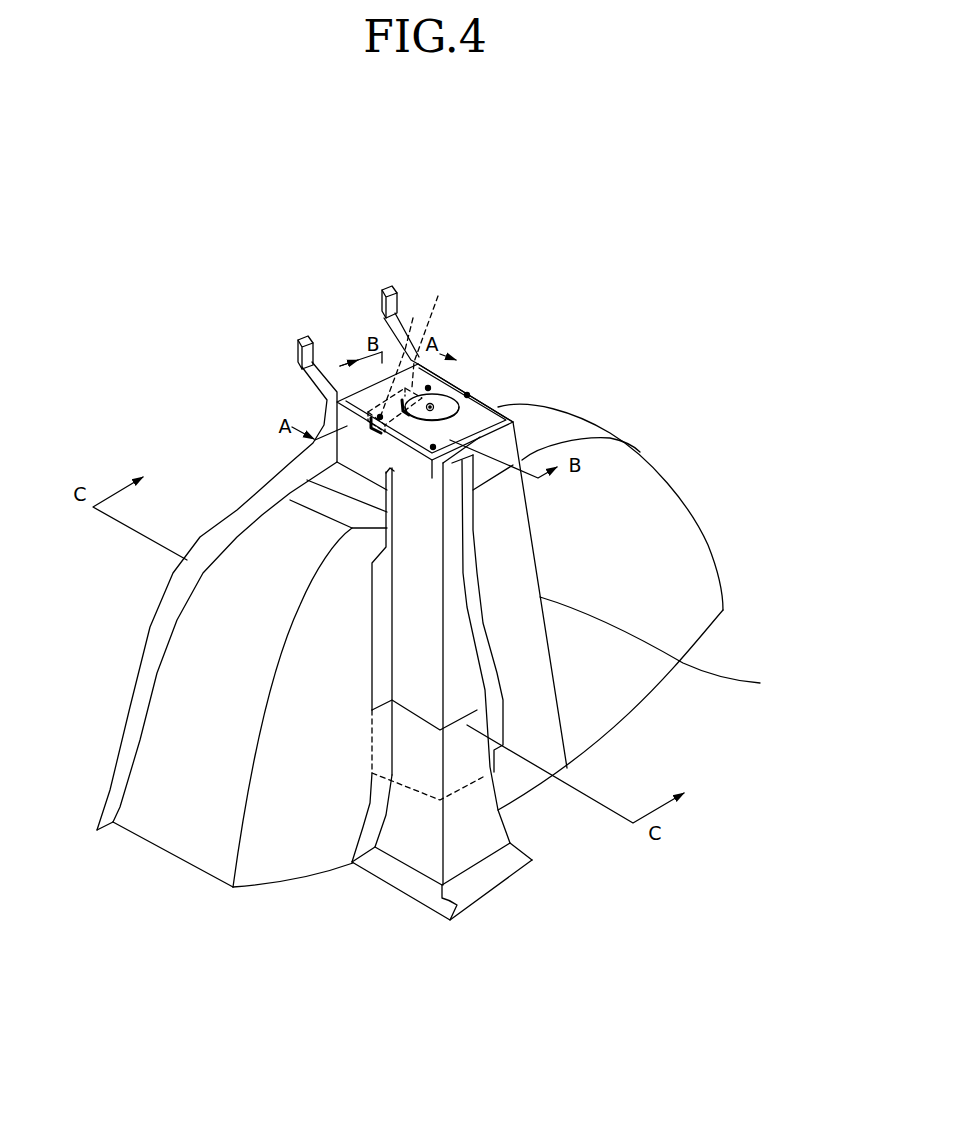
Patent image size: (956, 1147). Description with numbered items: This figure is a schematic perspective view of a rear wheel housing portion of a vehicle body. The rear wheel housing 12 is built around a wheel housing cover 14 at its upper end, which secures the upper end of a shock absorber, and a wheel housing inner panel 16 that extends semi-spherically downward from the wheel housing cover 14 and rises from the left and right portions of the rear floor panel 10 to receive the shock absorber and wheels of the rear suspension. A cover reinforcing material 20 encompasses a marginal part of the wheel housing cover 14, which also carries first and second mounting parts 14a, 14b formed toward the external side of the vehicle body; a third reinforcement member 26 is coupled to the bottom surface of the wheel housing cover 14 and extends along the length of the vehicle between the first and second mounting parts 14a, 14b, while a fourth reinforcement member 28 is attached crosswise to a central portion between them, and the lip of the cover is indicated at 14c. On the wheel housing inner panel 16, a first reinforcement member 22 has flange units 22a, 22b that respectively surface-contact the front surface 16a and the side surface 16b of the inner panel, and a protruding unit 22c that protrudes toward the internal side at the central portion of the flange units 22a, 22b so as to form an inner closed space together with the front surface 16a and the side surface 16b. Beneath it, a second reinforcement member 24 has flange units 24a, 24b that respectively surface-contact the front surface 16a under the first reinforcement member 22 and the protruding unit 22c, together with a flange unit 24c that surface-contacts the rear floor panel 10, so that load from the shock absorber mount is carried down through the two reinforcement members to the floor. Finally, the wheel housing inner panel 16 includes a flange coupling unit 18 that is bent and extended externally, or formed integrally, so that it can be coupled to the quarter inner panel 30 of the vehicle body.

The rear floor panel 10 is at (690, 728).
The rear wheel housing 12 is at (260, 377).
The wheel housing cover 14 is at (433, 445).
The first mounting part 14a is at (380, 355).
The second mounting part 14b is at (428, 386).
The flange rim of plate 14c is at (467, 395).
The wheel housing inner panel 16 is at (695, 577).
The front surface 16a is at (313, 697).
The side surface 16b is at (670, 644).
The flange coupling unit 18 is at (212, 557).
The cover reinforcing material 20 is at (505, 438).
The first reinforcement member 22 is at (407, 612).
The flange unit 22a is at (395, 650).
The flange unit 22b is at (470, 533).
The protruding unit 22c is at (452, 570).
The second reinforcement member 24 is at (372, 896).
The flange unit 24a is at (373, 813).
The flange unit 24b is at (480, 840).
The flange unit 24c is at (477, 890).
The third reinforcement member 26 is at (432, 340).
The fourth reinforcement member 28 is at (397, 364).
The quarter inner panel 30 is at (190, 458).